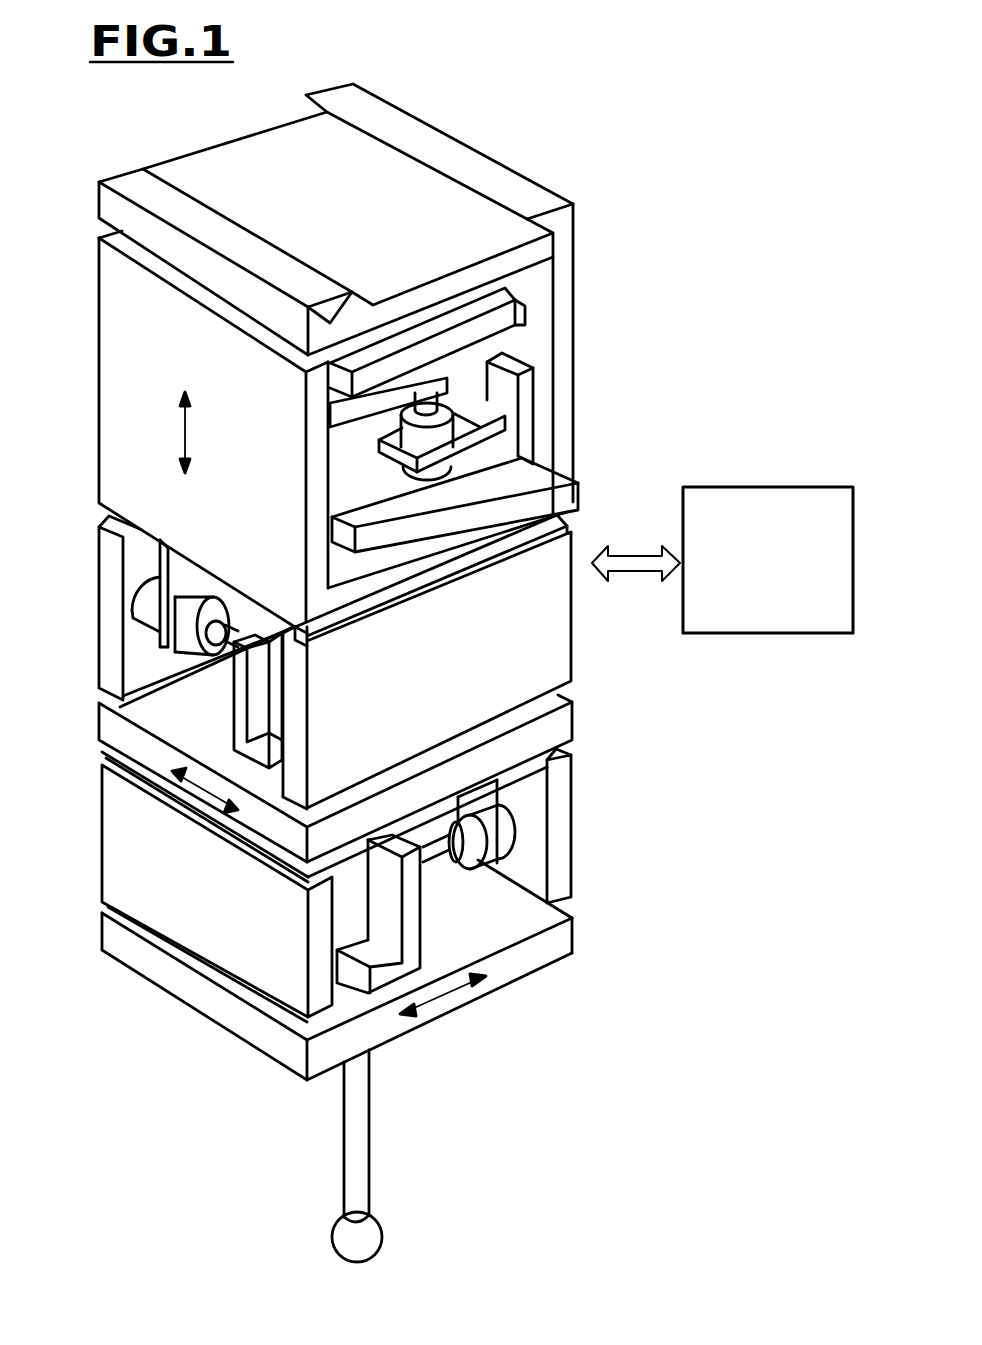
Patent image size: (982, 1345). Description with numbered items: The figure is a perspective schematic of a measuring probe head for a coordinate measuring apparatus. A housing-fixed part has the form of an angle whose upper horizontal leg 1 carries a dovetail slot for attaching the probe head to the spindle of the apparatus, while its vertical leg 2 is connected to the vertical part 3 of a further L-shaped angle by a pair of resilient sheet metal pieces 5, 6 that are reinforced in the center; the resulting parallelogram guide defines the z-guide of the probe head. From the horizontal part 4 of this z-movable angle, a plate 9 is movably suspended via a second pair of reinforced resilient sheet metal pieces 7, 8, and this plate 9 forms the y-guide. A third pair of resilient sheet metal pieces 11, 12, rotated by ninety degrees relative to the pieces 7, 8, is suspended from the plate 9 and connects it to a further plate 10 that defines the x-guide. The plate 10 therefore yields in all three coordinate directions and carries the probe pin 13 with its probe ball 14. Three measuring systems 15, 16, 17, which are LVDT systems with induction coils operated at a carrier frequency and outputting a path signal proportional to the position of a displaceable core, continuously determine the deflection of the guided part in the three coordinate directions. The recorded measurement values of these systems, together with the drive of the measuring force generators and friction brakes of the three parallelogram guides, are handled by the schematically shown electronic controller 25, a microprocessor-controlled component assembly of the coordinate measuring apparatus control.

The upper horizontal leg 1 is at (198, 180).
The vertical leg 2 is at (568, 357).
The vertical part 3 is at (115, 350).
The horizontal part 4 is at (575, 493).
The resilient sheet metal piece 5 is at (510, 322).
The resilient sheet metal piece 6 is at (505, 460).
The reinforced resilient sheet metal piece 7 is at (553, 617).
The reinforced resilient sheet metal piece 8 is at (108, 603).
The plate 9 is at (563, 732).
The plate 10 is at (558, 943).
The resilient sheet metal piece 11 is at (563, 828).
The resilient sheet metal piece 12 is at (142, 828).
The probe pin 13 is at (358, 1158).
The probe ball 14 is at (362, 1233).
The measuring system 15 is at (378, 432).
The measuring system 16 is at (190, 650).
The measuring system 17 is at (463, 865).
The electronic controller 25 is at (793, 505).